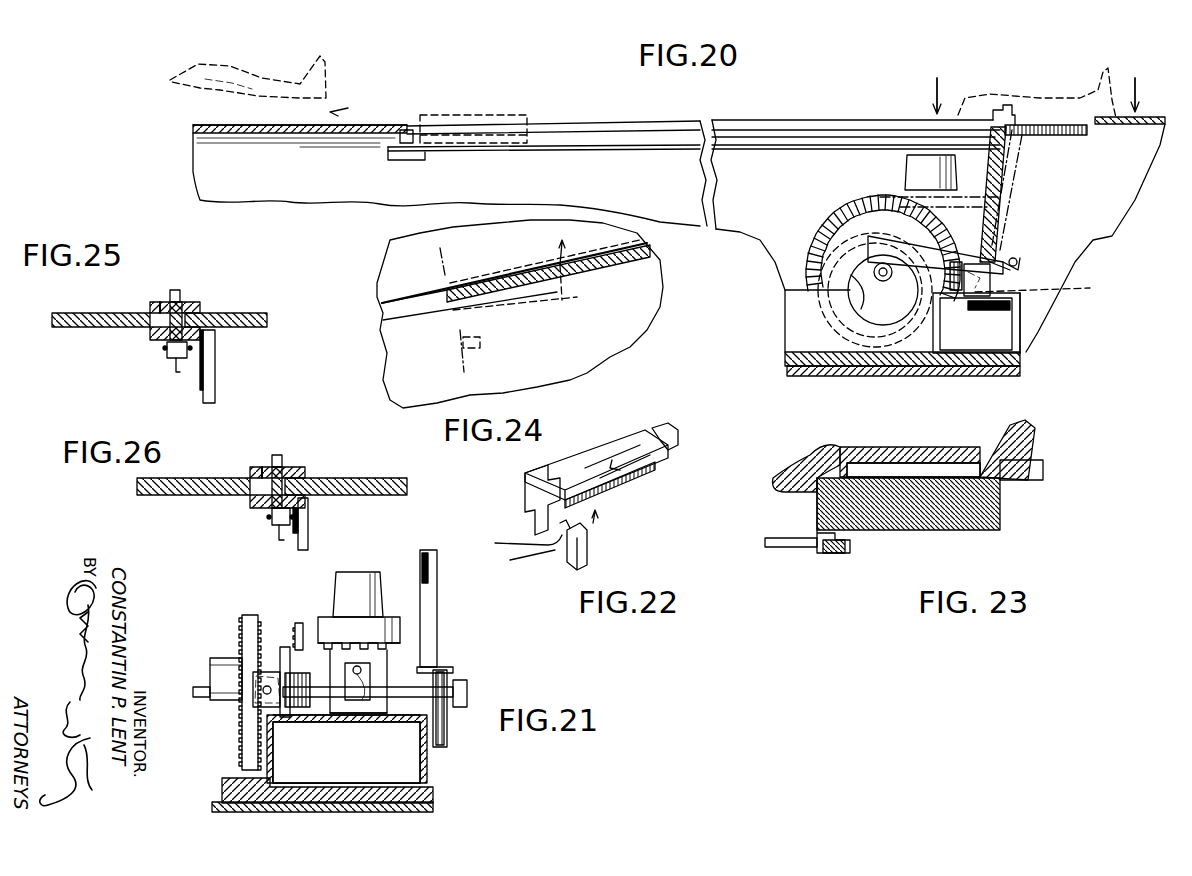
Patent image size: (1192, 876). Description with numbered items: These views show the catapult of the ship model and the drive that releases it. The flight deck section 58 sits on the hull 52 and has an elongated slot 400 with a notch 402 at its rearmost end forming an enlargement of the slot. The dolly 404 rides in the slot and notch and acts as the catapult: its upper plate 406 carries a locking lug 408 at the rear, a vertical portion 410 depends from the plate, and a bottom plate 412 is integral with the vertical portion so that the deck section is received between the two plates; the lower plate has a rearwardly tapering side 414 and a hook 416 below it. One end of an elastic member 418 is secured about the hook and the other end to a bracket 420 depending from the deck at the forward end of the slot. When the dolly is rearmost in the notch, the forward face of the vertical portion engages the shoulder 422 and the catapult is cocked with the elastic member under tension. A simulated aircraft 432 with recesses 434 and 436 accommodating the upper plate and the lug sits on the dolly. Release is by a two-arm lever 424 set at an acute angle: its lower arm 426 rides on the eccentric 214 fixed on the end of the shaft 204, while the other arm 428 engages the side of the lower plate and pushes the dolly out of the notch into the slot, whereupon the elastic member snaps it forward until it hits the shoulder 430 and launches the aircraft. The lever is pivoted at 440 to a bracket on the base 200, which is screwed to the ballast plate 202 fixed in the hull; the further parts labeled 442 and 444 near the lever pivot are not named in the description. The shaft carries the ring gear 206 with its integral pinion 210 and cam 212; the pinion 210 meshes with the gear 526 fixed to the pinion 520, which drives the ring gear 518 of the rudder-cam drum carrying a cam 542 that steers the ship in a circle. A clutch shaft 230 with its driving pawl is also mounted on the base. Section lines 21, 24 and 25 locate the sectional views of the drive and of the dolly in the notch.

In FIG. 20, the section line 21— 21 is at (832, 244).
In FIG. 20, the section line 24— 24 is at (1037, 82).
In FIG. 24, the section line 25— 25 is at (428, 268).
In FIG. 21, the hull 52 is at (415, 812).
In FIG. 20, the flight deck section 58 is at (385, 122).
In FIG. 25, the flight deck section 58 is at (246, 312).
In FIG. 26, the flight deck section 58 is at (388, 479).
In FIG. 20, the base 200 is at (790, 343).
In FIG. 21, the ballast plate 202 is at (365, 782).
In FIG. 20, the shaft 204 is at (872, 272).
In FIG. 21, the shaft 204 is at (205, 686).
In FIG. 21, the ring gear 206 is at (242, 616).
In FIG. 21, the pinion 210 is at (298, 722).
In FIG. 21, the cam 212 is at (225, 658).
In FIG. 20, the eccentric or cam 214 is at (930, 327).
In FIG. 21, the eccentric or cam 214 is at (447, 738).
In FIG. 21, the clutch shaft 230 is at (383, 712).
In FIG. 20, the elongated slot 400 is at (602, 124).
In FIG. 24, the notch 402 is at (462, 322).
In FIG. 25, the notch 402 is at (152, 327).
In FIG. 26, the notch 402 is at (252, 496).
In FIG. 20, the dolly 404 is at (477, 110).
In FIG. 25, the dolly 404 is at (197, 299).
In FIG. 26, the dolly 404 is at (306, 462).
In FIG. 22, the dolly 404 is at (660, 452).
In FIG. 22, the upper plate 406 is at (598, 455).
In FIG. 25, the locking lug 408 is at (178, 290).
In FIG. 26, the locking lug 408 is at (278, 455).
In FIG. 22, the locking lug 408 is at (672, 428).
In FIG. 24, the vertical portion 410 is at (500, 290).
In FIG. 25, the vertical portion 410 is at (168, 300).
In FIG. 26, the vertical portion 410 is at (268, 467).
In FIG. 22, the vertical portion 410 is at (538, 507).
In FIG. 20, the bottom plate 412 is at (500, 140).
In FIG. 24, the bottom plate 412 is at (465, 284).
In FIG. 25, the bottom plate 412 is at (150, 340).
In FIG. 22, the bottom plate 412 is at (630, 493).
In FIG. 23, the bottom plate 412 is at (895, 530).
In FIG. 24, the side of lower plate 414 is at (527, 305).
In FIG. 22, the side of lower plate 414 is at (610, 500).
In FIG. 25, the hook 416 is at (180, 360).
In FIG. 26, the hook 416 is at (280, 528).
In FIG. 22, the hook 416 is at (565, 545).
In FIG. 23, the hook 416 is at (840, 553).
In FIG. 20, the elastic member 418 is at (760, 147).
In FIG. 25, the elastic member 418 is at (168, 350).
In FIG. 26, the elastic member 418 is at (272, 520).
In FIG. 22, the elastic member 418 is at (520, 560).
In FIG. 23, the elastic member 418 is at (782, 550).
In FIG. 20, the bracket 420 is at (408, 160).
In FIG. 24, the shoulder 422 is at (450, 305).
In FIG. 20, the two-arm lever 424 is at (1020, 262).
In FIG. 20, the lower arm 426 is at (882, 240).
In FIG. 26, the lower arm 426 is at (312, 535).
In FIG. 21, the lower arm 426 is at (447, 672).
In FIG. 20, the other arm 428 is at (1020, 190).
In FIG. 24, the other arm 428 is at (480, 345).
In FIG. 25, the other arm 428 is at (216, 380).
In FIG. 22, the other arm 428 is at (590, 560).
In FIG. 21, the other arm 428 is at (437, 612).
In FIG. 20, the shoulder 430 is at (428, 115).
In FIG. 20, the simulated aircraft 432 is at (252, 72).
In FIG. 23, the simulated aircraft 432 is at (880, 452).
In FIG. 23, the recess 434 is at (842, 450).
In FIG. 23, the recess 436 is at (990, 450).
In FIG. 20, the pivot 440 is at (1049, 289).
In FIG. 20, the housing side 442 is at (1022, 330).
In FIG. 20, the connecting rod 444 is at (1010, 266).
In FIG. 21, the ring gear 518 is at (400, 622).
In FIG. 21, the pinion 520 is at (303, 643).
In FIG. 21, the gear 526 is at (295, 648).
In FIG. 20, the cam 542 is at (905, 175).
In FIG. 21, the cam 542 is at (383, 575).